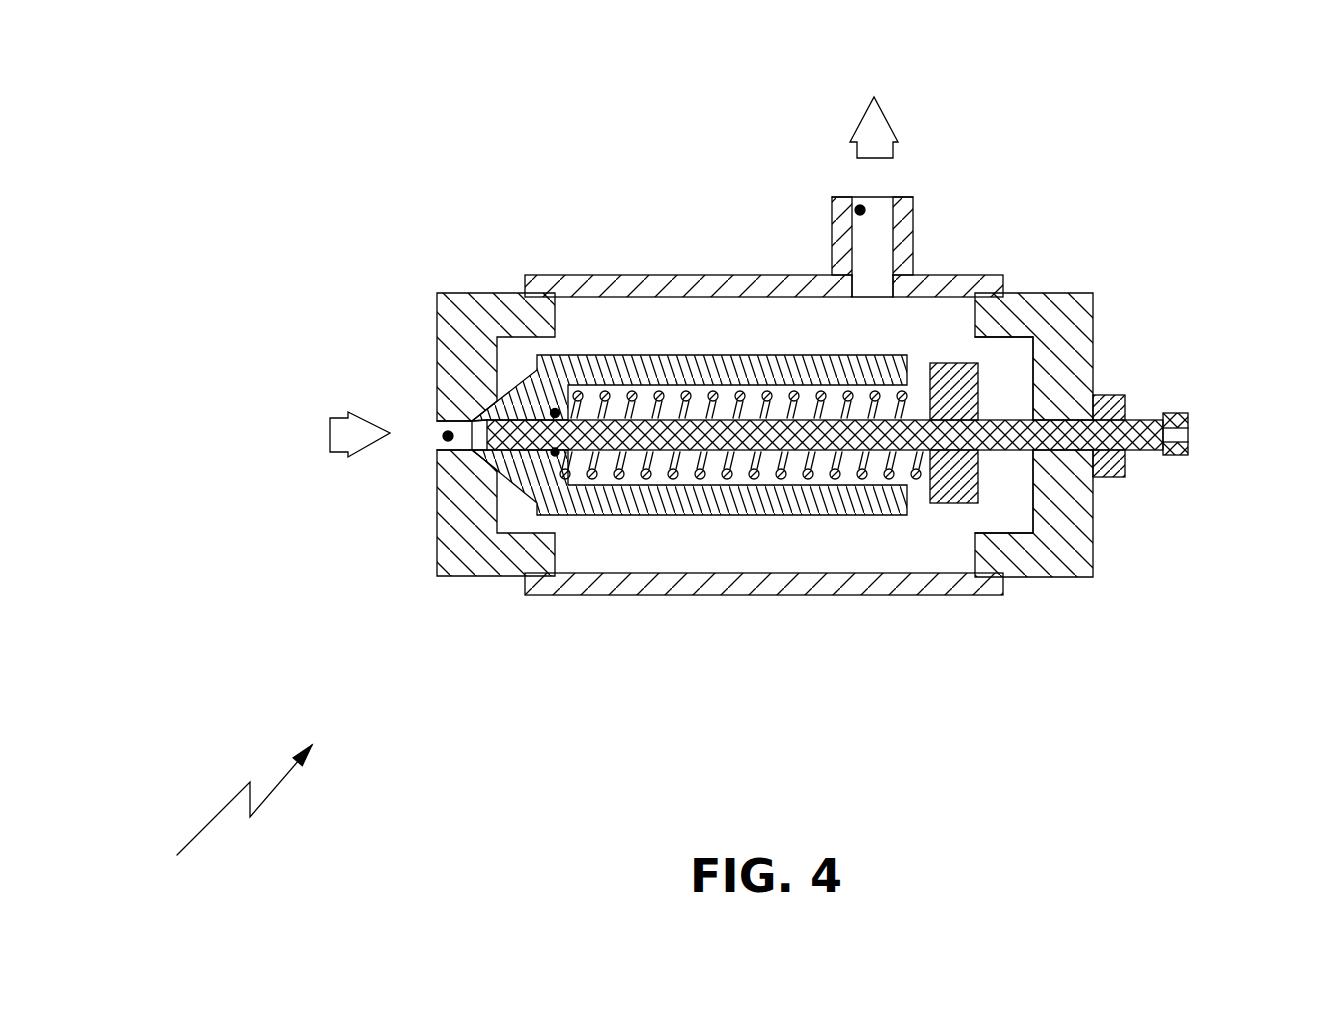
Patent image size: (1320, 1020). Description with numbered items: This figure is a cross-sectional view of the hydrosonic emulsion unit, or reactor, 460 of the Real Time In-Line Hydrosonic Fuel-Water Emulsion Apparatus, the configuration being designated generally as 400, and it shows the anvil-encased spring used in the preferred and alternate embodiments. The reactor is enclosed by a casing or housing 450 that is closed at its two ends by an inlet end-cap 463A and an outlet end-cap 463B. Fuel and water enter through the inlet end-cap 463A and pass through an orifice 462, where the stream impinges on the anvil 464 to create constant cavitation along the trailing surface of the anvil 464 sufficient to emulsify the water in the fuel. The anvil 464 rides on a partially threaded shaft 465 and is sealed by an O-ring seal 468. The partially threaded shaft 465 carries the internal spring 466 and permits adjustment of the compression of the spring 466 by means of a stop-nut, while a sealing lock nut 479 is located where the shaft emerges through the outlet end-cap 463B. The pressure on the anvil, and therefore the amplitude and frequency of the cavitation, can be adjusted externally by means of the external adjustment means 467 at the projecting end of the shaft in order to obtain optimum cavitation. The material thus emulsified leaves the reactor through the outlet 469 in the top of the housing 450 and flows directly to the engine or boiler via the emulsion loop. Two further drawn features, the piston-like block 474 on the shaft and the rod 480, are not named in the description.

The configuration of FIG. 4 400 is at (229, 813).
The casing or housing 450 is at (740, 597).
The hydrosonic emulsion unit/reactor 460 is at (448, 436).
The orifice 462 is at (486, 416).
The inlet end-cap 463A is at (483, 293).
The outlet end-cap 463B is at (1043, 293).
The anvil 464 is at (693, 515).
The partially threaded shaft 465 is at (1005, 527).
The spring 466 is at (623, 475).
The external adjustment means 467 is at (1177, 413).
The O-ring seal 468 is at (555, 413).
The outlet 469 is at (860, 210).
The piston 474 is at (942, 507).
The sealing lock nut 479 is at (1108, 393).
The shaft 480 is at (1070, 452).